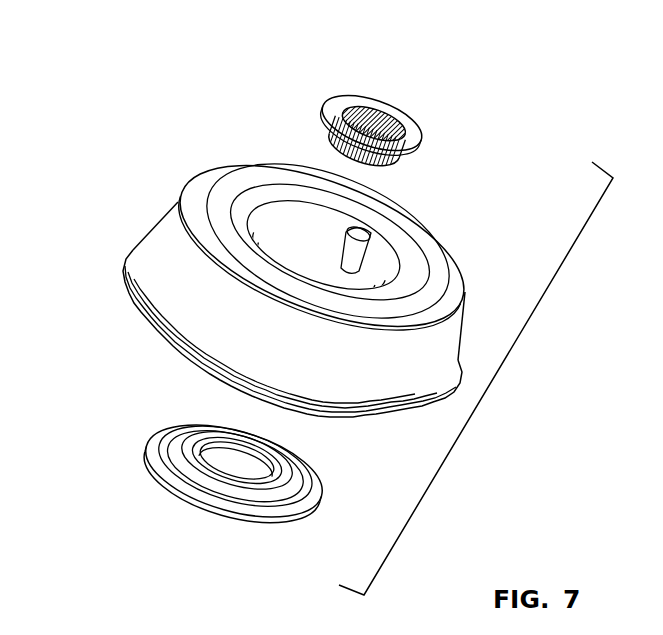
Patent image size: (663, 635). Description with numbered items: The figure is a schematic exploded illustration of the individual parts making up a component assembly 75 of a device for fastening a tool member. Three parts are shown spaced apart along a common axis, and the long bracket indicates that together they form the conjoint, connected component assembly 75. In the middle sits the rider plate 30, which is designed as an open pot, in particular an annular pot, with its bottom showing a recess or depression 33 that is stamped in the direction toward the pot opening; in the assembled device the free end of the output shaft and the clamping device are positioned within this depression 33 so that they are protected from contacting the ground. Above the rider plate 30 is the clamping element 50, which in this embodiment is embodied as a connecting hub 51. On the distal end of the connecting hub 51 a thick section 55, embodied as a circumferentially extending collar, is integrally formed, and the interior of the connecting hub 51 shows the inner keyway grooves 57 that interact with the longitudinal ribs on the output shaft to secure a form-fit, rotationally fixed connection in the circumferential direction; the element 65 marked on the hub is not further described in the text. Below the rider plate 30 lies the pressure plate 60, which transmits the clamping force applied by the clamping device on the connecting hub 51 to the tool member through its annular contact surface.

The rider plate 30 is at (284, 247).
The recess or depression 33 is at (272, 224).
The clamping element 50 is at (393, 115).
The connecting hub 51 is at (403, 165).
The thick section 55 is at (328, 98).
The inner keyway grooves 57 is at (377, 117).
The pressure plate 60 is at (148, 459).
The opening 65 is at (410, 125).
The component assembly 75 is at (490, 383).